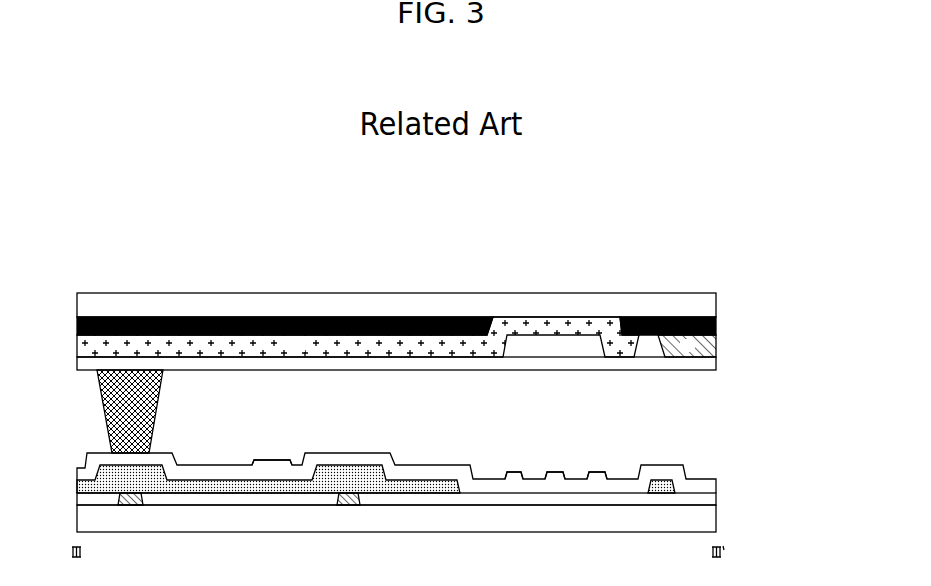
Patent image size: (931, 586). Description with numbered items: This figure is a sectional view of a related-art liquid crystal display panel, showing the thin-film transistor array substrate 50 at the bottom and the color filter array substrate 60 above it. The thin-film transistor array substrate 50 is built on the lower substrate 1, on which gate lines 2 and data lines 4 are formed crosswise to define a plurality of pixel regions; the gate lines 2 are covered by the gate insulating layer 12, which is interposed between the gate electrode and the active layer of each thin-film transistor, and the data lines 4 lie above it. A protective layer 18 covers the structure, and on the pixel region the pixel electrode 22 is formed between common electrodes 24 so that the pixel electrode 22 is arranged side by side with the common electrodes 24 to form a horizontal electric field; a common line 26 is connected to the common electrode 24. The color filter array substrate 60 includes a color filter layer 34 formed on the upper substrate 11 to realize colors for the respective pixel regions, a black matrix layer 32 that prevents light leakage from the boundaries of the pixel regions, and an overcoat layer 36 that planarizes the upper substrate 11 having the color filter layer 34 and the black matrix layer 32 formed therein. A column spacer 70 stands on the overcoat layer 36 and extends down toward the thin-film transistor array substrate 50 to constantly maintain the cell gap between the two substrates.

The lower substrate 1 is at (716, 520).
The gate line 2 is at (133, 505).
The data line 4 is at (425, 493).
The upper substrate 11 is at (716, 299).
The gate insulating layer 12 is at (716, 502).
The protective layer 18 is at (716, 484).
The pixel electrode 22 is at (556, 477).
The common electrode 24 is at (516, 477).
The common line 26 is at (270, 460).
The black matrix layer 32 is at (716, 326).
The color filter layer 34 is at (716, 345).
The overcoat layer 36 is at (716, 364).
The thin-film transistor array substrate 50 is at (759, 497).
The color filter array substrate 60 is at (759, 325).
The column spacer 70 is at (158, 410).